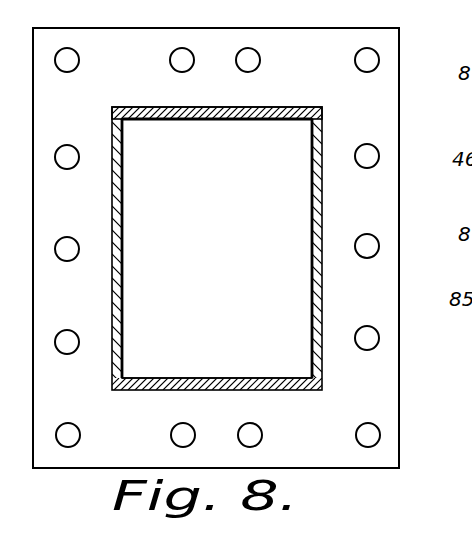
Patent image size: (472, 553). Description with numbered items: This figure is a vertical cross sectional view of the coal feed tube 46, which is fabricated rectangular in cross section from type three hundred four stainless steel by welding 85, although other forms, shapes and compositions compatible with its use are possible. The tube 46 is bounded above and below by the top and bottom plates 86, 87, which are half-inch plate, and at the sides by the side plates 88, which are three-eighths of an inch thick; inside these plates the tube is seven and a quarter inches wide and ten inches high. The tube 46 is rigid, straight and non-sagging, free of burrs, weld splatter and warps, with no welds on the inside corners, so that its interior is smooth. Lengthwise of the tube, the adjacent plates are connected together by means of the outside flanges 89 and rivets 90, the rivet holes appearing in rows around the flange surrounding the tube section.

The outside flanges 89 is at (337, 43).
The rivets 90 is at (373, 56).
The tube 46 is at (322, 213).
The welding 85 is at (322, 119).
The top plate 86 is at (210, 120).
The bottom plate 87 is at (212, 378).
The side plates 88 is at (312, 258).